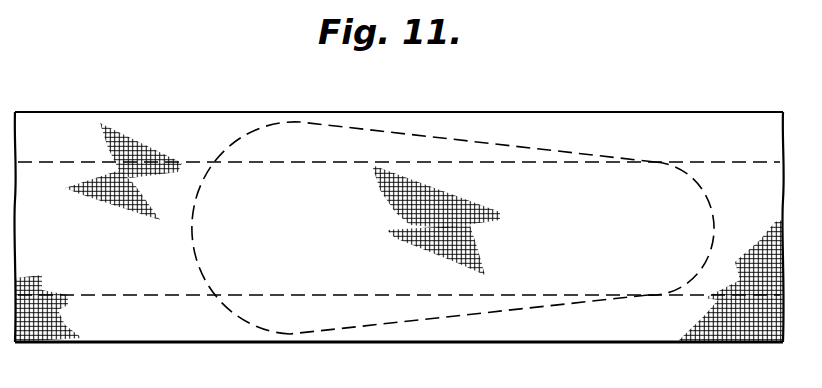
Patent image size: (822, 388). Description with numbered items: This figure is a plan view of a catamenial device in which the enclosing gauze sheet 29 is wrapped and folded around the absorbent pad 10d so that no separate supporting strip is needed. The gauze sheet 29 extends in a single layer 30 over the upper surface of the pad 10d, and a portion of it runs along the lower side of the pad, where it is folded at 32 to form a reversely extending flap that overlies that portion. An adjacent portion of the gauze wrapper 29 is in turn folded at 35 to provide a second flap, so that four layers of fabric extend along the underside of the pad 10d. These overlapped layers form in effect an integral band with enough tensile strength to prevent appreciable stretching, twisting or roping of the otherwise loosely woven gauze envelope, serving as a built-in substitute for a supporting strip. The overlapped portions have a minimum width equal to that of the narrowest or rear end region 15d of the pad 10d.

The pad 10d is at (502, 143).
The rear end region of the pad 15d is at (700, 193).
The gauze sheet 29 is at (238, 112).
The single layer 30 is at (362, 316).
The fold 32 is at (68, 162).
The fold 35 is at (160, 295).